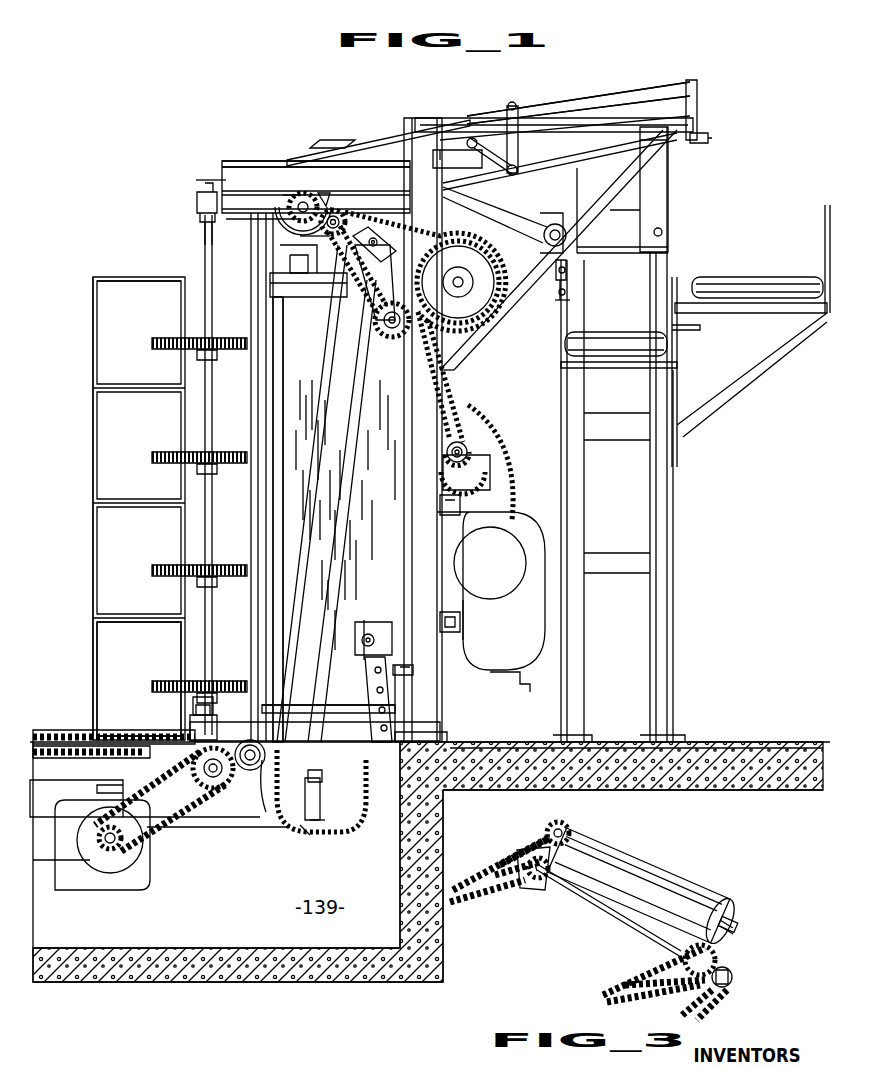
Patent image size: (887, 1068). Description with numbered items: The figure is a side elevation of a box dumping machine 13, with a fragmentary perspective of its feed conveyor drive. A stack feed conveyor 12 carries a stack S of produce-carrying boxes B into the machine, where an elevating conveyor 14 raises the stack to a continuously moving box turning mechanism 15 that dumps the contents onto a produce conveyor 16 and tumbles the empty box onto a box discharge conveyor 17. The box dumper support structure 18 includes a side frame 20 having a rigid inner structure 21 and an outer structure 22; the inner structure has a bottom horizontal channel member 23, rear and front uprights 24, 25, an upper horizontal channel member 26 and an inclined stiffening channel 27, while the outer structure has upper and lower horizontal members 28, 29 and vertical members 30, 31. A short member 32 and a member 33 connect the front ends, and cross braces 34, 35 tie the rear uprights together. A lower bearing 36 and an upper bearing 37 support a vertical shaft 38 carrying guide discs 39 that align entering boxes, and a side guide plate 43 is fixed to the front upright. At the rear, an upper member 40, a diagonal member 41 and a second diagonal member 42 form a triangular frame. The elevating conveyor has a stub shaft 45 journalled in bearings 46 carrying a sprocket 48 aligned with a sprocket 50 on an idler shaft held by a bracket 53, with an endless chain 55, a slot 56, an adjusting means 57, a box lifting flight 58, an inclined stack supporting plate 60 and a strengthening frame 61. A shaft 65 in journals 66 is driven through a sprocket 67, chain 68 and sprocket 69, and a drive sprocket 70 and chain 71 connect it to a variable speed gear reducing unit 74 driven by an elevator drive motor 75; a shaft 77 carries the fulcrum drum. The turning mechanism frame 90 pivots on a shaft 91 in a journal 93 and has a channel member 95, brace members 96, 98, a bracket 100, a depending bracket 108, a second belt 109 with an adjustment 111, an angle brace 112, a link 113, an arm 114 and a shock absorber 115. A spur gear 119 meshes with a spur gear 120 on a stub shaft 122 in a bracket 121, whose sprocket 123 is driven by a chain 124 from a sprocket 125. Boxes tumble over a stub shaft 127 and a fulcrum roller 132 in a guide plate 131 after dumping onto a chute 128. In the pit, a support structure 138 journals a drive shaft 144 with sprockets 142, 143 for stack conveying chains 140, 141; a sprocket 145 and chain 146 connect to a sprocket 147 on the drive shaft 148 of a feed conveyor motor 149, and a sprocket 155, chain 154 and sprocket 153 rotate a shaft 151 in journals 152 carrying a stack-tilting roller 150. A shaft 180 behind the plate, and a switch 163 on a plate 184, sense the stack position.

In FIG. 1, the stack feed conveyor 12 is at (63, 728).
In FIG. 3, the stack feed conveyor 12 is at (582, 990).
In FIG. 1, the box dumping machine 13 is at (241, 152).
In FIG. 1, the elevating conveyor 14 is at (338, 490).
In FIG. 1, the box turning mechanism 15 is at (643, 85).
In FIG. 1, the produce conveyor 16 is at (632, 320).
In FIG. 1, the box discharge conveyor 17 is at (767, 262).
In FIG. 1, the box dumper support structure 18 is at (206, 175).
In FIG. 1, the side frame 20 is at (244, 302).
In FIG. 1, the inner structure 21 is at (288, 547).
In FIG. 1, the outer structure 22 is at (231, 634).
In FIG. 1, the bottom horizontal channel member 23 is at (385, 716).
In FIG. 1, the rear upright member 24 is at (430, 547).
In FIG. 1, the front upright member 25 is at (272, 393).
In FIG. 1, the upper horizontal channel member 26 is at (256, 166).
In FIG. 1, the inclined stiffening channel 27 is at (352, 388).
In FIG. 1, the upper horizontal member 28 is at (400, 204).
In FIG. 1, the lower horizontal member 29 is at (400, 734).
In FIG. 1, the vertical member 30 is at (402, 692).
In FIG. 1, the vertical member 31 is at (258, 414).
In FIG. 1, the short member 32 is at (193, 708).
In FIG. 1, the connecting member 33 is at (205, 184).
In FIG. 1, the cross brace 34 is at (462, 510).
In FIG. 1, the cross brace 35 is at (455, 628).
In FIG. 1, the lower bearing 36 is at (190, 726).
In FIG. 1, the upper bearing 37 is at (197, 200).
In FIG. 1, the vertical shaft 38 is at (203, 419).
In FIG. 1, the guide discs 39 is at (182, 340).
In FIG. 1, the upper member 40 is at (555, 122).
In FIG. 1, the diagonal member 41 is at (640, 176).
In FIG. 1, the second diagonal member 42 is at (500, 212).
In FIG. 1, the side guide plate 43 is at (302, 519).
In FIG. 1, the stub shaft 45 is at (385, 322).
In FIG. 1, the bearings 46 is at (368, 318).
In FIG. 1, the sprocket 48 is at (374, 355).
In FIG. 1, the sprocket 50 is at (340, 802).
In FIG. 1, the bracket 53 is at (328, 744).
In FIG. 1, the endless chain 55 is at (312, 828).
In FIG. 1, the slot 56 is at (325, 772).
In FIG. 1, the adjusting means 57 is at (316, 820).
In FIG. 1, the box lifting flight 58 is at (268, 812).
In FIG. 1, the inclined stack supporting plate 60 is at (350, 690).
In FIG. 1, the strengthening frame 61 is at (395, 666).
In FIG. 1, the shaft 65 is at (476, 448).
In FIG. 1, the journals 66 is at (452, 402).
In FIG. 1, the sprocket 67 is at (450, 365).
In FIG. 1, the chain 68 is at (453, 382).
In FIG. 1, the sprocket 69 is at (466, 428).
In FIG. 1, the drive sprocket 70 is at (487, 462).
In FIG. 1, the chain 71 is at (505, 486).
In FIG. 1, the variable speed gear reducing unit 74 is at (494, 620).
In FIG. 1, the elevator drive motor 75 is at (490, 563).
In FIG. 1, the shaft 77 is at (466, 280).
In FIG. 1, the frame 90 is at (372, 134).
In FIG. 1, the shaft 91 is at (306, 196).
In FIG. 1, the journal 93 is at (328, 192).
In FIG. 1, the channel member 95 is at (668, 104).
In FIG. 1, the brace member 96 is at (322, 142).
In FIG. 1, the brace member 98 is at (698, 86).
In FIG. 1, the bracket 100 is at (277, 228).
In FIG. 1, the depending bracket 108 is at (692, 120).
In FIG. 1, the second belt 109 is at (567, 142).
In FIG. 1, the adjustment 111 is at (700, 140).
In FIG. 1, the angle brace 112 is at (514, 104).
In FIG. 1, the link 113 is at (480, 150).
In FIG. 1, the arm 114 is at (514, 164).
In FIG. 1, the shock absorber 115 is at (448, 152).
In FIG. 1, the spur gear 119 is at (295, 196).
In FIG. 1, the spur gear 120 is at (313, 232).
In FIG. 1, the bracket 121 is at (432, 268).
In FIG. 1, the stub shaft 122 is at (338, 220).
In FIG. 1, the sprocket 123 is at (380, 240).
In FIG. 1, the chain 124 is at (562, 293).
In FIG. 1, the sprocket 125 is at (560, 275).
In FIG. 1, the stub shaft 127 is at (590, 236).
In FIG. 1, the chute 128 is at (554, 306).
In FIG. 1, the guide plate 131 is at (655, 208).
In FIG. 1, the fulcrum roller 132 is at (668, 230).
In FIG. 1, the support structure 138 is at (100, 782).
In FIG. 3, the stack conveying chain 140 is at (470, 880).
In FIG. 1, the stack conveying chain 141 is at (82, 756).
In FIG. 3, the stack conveying chain 141 is at (615, 968).
In FIG. 3, the sprocket 142 is at (537, 890).
In FIG. 3, the sprocket 143 is at (712, 952).
In FIG. 1, the drive shaft 144 is at (218, 778).
In FIG. 3, the drive shaft 144 is at (608, 916).
In FIG. 1, the sprocket 145 is at (216, 782).
In FIG. 3, the sprocket 145 is at (732, 972).
In FIG. 1, the chain 146 is at (124, 828).
In FIG. 3, the chain 146 is at (705, 996).
In FIG. 1, the sprocket 147 is at (125, 840).
In FIG. 1, the drive shaft 148 is at (125, 855).
In FIG. 1, the feed conveyor motor 149 is at (130, 882).
In FIG. 3, the stack-tilting roller 150 is at (622, 856).
In FIG. 1, the shaft 151 is at (242, 750).
In FIG. 3, the shaft 151 is at (730, 930).
In FIG. 1, the journals 152 is at (278, 746).
In FIG. 3, the sprocket 153 is at (565, 826).
In FIG. 3, the chain 154 is at (548, 834).
In FIG. 3, the sprocket 155 is at (540, 858).
In FIG. 1, the switch 163 is at (298, 263).
In FIG. 1, the shaft 180 is at (366, 641).
In FIG. 1, the plate 184 is at (288, 250).
In FIG. 1, the stack S is at (85, 316).
In FIG. 1, the boxes B is at (139, 488).